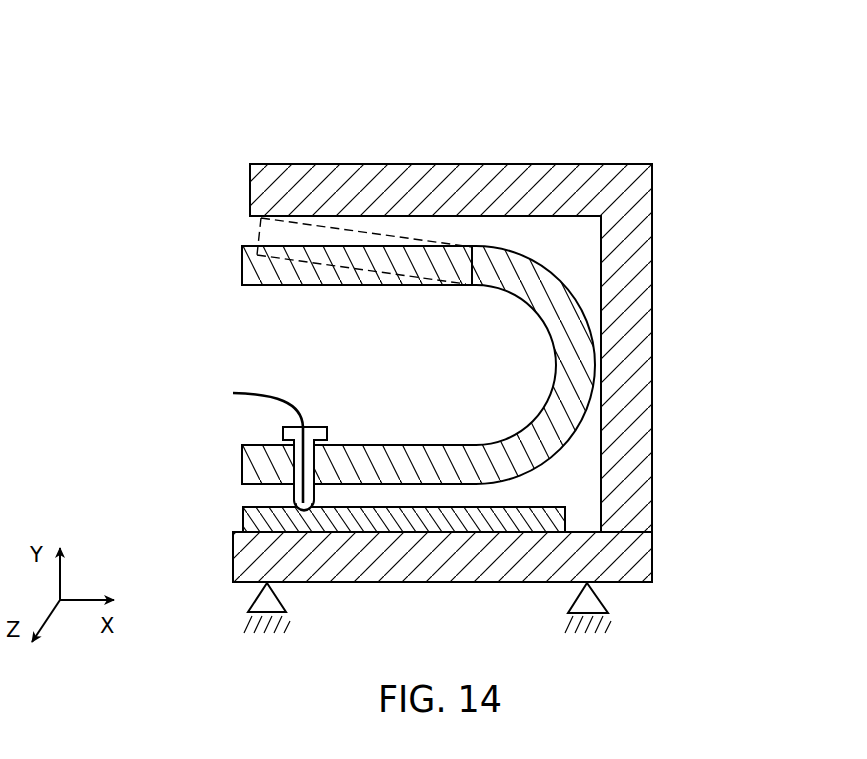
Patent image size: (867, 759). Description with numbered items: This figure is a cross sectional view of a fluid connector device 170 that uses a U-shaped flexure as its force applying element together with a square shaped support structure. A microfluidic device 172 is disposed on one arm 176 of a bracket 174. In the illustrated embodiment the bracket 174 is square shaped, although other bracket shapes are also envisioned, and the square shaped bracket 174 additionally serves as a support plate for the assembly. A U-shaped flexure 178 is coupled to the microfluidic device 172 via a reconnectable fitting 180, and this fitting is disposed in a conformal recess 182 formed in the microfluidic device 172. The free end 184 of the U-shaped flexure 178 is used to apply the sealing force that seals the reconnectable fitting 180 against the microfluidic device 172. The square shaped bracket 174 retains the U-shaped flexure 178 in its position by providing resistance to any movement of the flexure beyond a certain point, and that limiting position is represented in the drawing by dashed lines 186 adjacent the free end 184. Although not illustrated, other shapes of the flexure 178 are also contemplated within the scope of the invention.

The fluid connector device 170 is at (626, 79).
The microfluidic device 172 is at (244, 518).
The bracket 174 is at (653, 245).
The arm 176 is at (440, 583).
The U-shaped flexure 178 is at (553, 377).
The reconnectable fitting 180 is at (284, 438).
The conformal recess 182 is at (323, 532).
The free end 184 is at (241, 268).
The dashed lines 186 is at (347, 228).